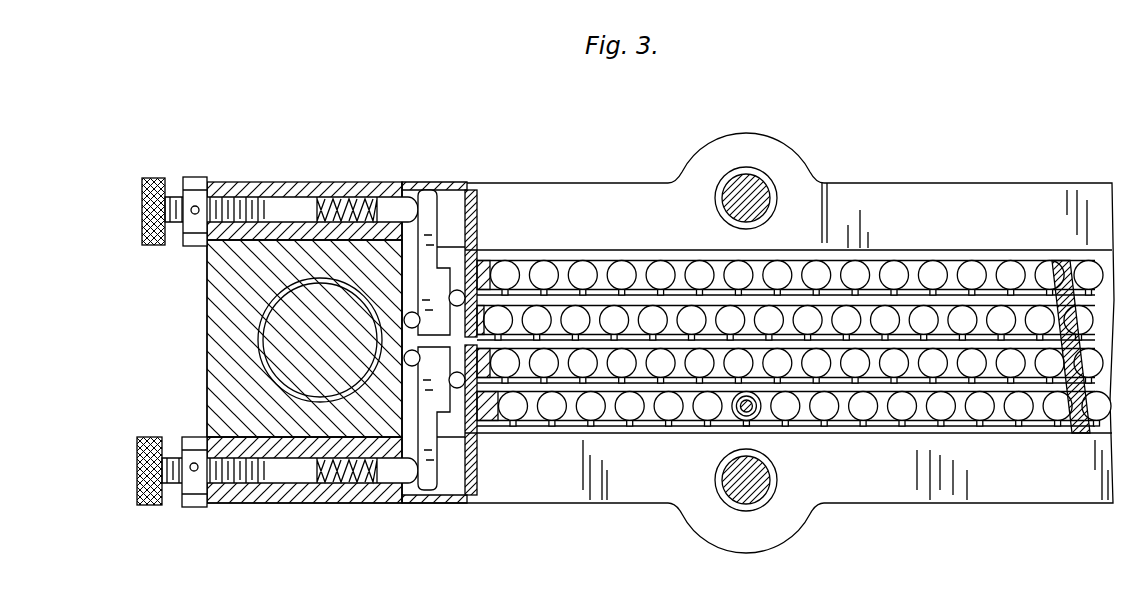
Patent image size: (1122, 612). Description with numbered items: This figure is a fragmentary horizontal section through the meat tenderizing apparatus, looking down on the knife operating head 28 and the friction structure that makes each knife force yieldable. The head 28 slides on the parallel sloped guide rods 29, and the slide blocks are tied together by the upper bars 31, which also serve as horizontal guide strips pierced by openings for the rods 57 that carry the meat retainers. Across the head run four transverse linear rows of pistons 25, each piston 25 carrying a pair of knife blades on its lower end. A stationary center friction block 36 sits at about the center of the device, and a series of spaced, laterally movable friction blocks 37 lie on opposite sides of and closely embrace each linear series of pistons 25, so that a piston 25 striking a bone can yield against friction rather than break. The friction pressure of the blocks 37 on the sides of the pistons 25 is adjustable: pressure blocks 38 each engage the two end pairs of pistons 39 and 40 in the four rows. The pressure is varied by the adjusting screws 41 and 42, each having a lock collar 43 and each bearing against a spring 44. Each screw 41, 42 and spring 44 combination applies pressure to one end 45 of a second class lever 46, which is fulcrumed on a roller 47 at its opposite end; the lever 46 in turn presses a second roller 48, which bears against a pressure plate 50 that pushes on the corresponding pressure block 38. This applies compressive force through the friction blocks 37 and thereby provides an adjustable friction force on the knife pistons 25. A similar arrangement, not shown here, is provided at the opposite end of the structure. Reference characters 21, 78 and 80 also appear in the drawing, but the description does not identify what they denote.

The housing 21 is at (886, 247).
The piston 25 is at (697, 276).
The knife operating head 28 is at (622, 502).
The guide rod 29 is at (270, 338).
The upper bar 31 is at (838, 240).
The center friction block 36 is at (1086, 410).
The friction block 37 is at (604, 262).
The pressure block 38 is at (480, 252).
The end pair of pistons 39 is at (500, 318).
The end pair of pistons 40 is at (496, 415).
The adjusting screw 41 is at (141, 191).
The adjusting screw 42 is at (136, 470).
The lock collar 43 is at (195, 178).
The spring 44 is at (345, 200).
The lever end 45 is at (428, 200).
The second class lever 46 is at (410, 268).
The roller 47 is at (404, 358).
The second roller 48 is at (458, 290).
The pressure plate 50 is at (470, 264).
The rod 57 is at (757, 185).
The marked ball core 78 is at (756, 412).
The marked ball 80 is at (736, 412).